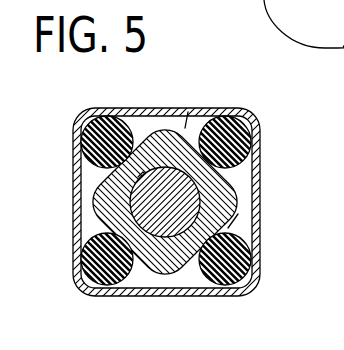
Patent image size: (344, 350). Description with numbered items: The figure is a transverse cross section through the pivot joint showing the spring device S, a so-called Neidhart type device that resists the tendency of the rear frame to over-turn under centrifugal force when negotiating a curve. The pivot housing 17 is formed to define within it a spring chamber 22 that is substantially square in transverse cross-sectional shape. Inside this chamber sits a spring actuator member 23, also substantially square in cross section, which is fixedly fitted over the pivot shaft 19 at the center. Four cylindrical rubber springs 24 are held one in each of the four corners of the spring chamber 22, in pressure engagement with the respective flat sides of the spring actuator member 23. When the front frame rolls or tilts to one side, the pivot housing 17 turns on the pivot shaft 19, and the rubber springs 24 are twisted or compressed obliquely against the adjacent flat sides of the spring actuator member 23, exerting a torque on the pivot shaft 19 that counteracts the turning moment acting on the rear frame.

The pivot housing 17 is at (256, 193).
The pivot shaft 19 is at (178, 212).
The spring chamber 22 is at (244, 232).
The spring actuator member 23 is at (94, 200).
The rubber springs 24 is at (88, 141).
The spring device S is at (188, 112).